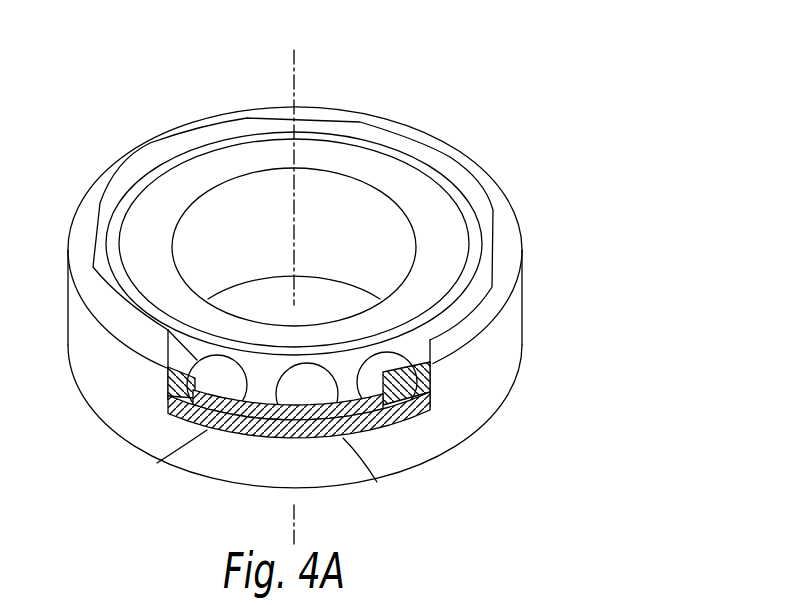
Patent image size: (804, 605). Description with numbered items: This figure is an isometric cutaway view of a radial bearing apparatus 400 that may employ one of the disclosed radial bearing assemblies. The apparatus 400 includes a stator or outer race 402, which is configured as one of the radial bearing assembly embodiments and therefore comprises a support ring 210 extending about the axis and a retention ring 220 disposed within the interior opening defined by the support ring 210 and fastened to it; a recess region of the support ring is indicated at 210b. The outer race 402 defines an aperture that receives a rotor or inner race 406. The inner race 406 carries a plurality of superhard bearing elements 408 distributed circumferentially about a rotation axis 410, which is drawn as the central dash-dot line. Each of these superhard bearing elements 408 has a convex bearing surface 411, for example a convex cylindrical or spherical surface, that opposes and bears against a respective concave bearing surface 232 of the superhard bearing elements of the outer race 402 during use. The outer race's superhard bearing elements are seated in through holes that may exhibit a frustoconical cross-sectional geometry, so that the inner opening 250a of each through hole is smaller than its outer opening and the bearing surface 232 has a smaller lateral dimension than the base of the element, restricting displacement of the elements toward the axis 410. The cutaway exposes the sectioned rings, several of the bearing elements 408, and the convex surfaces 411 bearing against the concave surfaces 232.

The radial bearing apparatus 400 is at (340, 272).
The outer race 402 is at (518, 172).
The inner race 406 is at (168, 198).
The superhard bearing elements 408 is at (214, 367).
The rotation axis 410 is at (295, 73).
The convex bearing surfaces 411 is at (373, 480).
The support ring 210 is at (342, 277).
The housing inner recess 210b is at (242, 156).
The retention ring 220 is at (483, 254).
The bearing surface 232 is at (240, 488).
The inner opening 250a is at (163, 462).